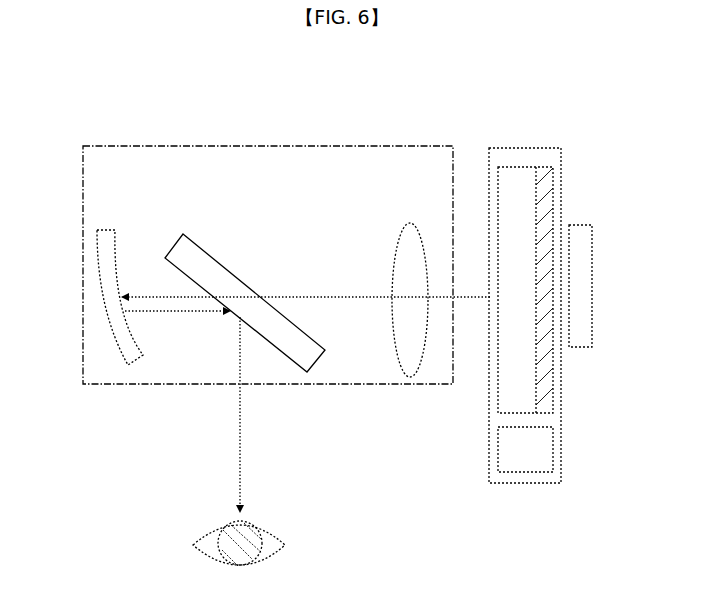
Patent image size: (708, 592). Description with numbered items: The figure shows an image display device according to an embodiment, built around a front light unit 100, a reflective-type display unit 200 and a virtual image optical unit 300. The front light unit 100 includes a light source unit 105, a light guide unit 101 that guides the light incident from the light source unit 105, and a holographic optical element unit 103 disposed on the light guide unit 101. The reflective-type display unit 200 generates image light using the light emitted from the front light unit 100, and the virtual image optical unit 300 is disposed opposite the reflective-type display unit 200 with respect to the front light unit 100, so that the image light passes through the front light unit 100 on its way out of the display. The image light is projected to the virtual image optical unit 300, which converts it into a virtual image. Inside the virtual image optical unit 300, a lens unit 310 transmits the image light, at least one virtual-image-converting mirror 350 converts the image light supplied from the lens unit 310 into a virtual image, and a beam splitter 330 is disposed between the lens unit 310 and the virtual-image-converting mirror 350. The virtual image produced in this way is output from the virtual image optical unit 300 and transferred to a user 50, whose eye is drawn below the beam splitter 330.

The user 50 is at (273, 545).
The front light unit 100 is at (541, 150).
The light guide unit 101 is at (501, 152).
The holographic optical element unit 103 is at (545, 197).
The light source unit 105 is at (525, 462).
The reflective-type display unit 200 is at (582, 285).
The virtual image optical unit 300 is at (266, 146).
The lens unit 310 is at (409, 377).
The beam splitter 330 is at (304, 352).
The virtual-image-converting mirror 350 is at (107, 293).